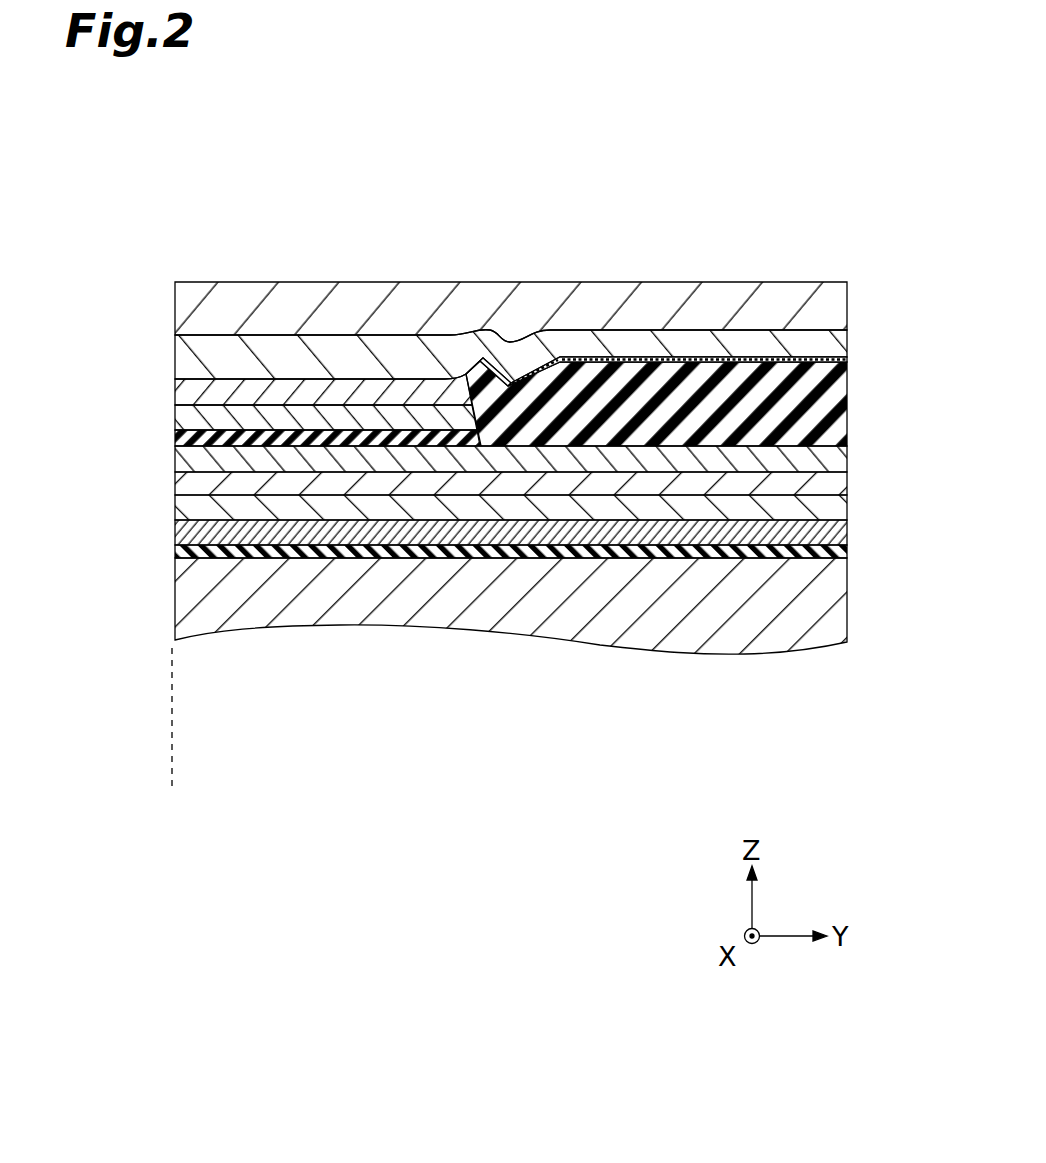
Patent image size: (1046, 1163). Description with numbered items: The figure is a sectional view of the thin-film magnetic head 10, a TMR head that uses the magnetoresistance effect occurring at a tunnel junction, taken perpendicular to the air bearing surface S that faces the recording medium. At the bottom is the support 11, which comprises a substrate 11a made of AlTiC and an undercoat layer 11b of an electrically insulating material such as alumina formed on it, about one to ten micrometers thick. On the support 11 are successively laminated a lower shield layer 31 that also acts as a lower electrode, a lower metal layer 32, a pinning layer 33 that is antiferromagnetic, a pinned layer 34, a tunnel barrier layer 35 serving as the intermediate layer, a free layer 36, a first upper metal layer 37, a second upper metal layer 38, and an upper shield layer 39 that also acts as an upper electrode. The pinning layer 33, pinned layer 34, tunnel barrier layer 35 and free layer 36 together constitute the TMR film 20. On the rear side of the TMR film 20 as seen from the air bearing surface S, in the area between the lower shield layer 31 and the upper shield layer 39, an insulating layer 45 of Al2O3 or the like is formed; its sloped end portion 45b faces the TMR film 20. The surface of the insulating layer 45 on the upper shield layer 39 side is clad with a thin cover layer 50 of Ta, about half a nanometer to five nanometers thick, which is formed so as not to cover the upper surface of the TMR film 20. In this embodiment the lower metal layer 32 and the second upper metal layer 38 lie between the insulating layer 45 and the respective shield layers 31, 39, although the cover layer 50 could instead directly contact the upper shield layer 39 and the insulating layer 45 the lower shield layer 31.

The thin-film magnetic head 10 is at (743, 222).
The support 11 is at (95, 567).
The substrate 11a is at (175, 608).
The undercoat layer 11b is at (175, 553).
The TMR film 20 is at (95, 375).
The lower shield layer 31 is at (175, 533).
The lower metal layer 32 is at (175, 507).
The pinning layer 33 is at (175, 483).
The pinned layer 34 is at (175, 457).
The tunnel barrier layer 35 is at (175, 438).
The free layer 36 is at (175, 417).
The first upper metal layer 37 is at (175, 386).
The second upper metal layer 38 is at (175, 350).
The upper shield layer 39 is at (175, 302).
The insulating layer 45 is at (840, 404).
The end portion of hard bias layer 45b is at (518, 367).
The cover layer 50 is at (847, 358).
The air bearing surface S is at (175, 633).